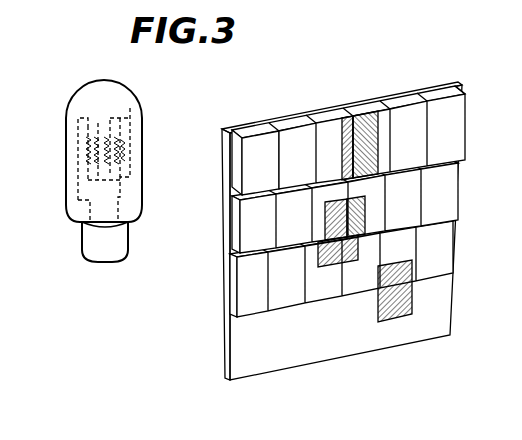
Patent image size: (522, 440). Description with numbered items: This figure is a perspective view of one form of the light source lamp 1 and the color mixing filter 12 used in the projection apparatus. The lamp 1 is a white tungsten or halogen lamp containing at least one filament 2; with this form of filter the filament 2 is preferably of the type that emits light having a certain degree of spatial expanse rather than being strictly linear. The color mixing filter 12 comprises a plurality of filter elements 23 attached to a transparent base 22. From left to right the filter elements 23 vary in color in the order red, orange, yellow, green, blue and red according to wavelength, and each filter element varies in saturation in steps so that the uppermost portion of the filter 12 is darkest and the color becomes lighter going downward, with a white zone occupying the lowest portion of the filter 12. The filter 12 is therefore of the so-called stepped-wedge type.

The light source lamp 1 is at (67, 134).
The filament 2 is at (87, 165).
The transparent base 22 is at (222, 157).
The color mixing filter 12 is at (347, 189).
The filter elements 23 is at (322, 115).